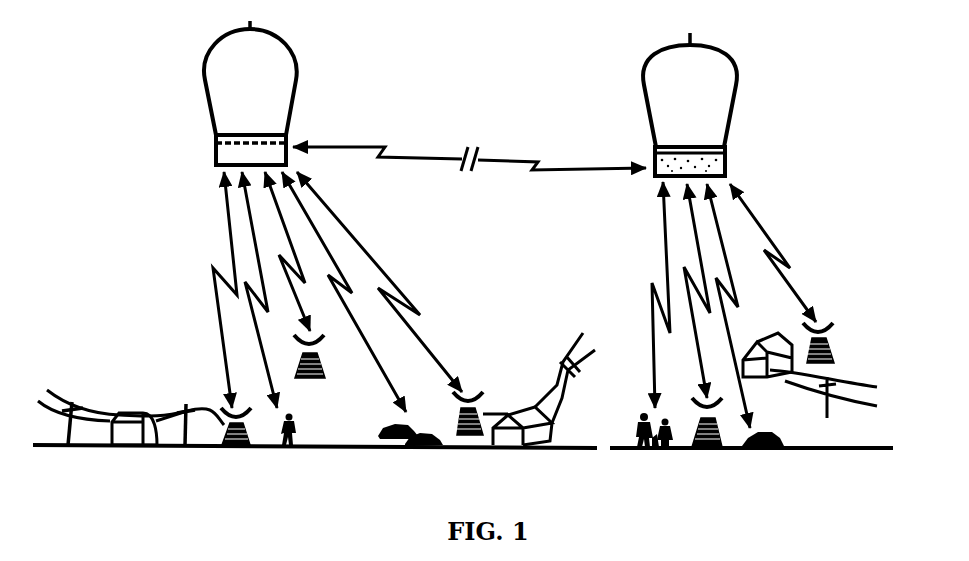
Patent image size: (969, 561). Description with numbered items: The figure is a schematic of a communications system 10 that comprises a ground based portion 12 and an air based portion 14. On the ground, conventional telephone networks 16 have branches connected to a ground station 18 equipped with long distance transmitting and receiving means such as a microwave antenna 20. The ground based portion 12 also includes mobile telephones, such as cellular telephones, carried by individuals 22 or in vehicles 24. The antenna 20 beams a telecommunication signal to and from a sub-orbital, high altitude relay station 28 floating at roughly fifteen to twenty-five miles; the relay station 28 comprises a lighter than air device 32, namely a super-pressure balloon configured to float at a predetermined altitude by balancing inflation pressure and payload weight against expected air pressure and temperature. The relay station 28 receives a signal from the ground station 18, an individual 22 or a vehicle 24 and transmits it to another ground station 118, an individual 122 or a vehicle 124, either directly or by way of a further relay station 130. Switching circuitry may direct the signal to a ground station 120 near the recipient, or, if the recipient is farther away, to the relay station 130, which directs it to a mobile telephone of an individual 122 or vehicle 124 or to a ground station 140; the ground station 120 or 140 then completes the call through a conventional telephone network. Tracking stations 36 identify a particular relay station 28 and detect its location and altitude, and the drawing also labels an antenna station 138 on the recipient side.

The communications system 10 is at (469, 85).
The ground based portion 12 is at (150, 360).
The air based portion 14 is at (165, 165).
The conventional telephone networks 16 is at (66, 420).
The ground station 18 is at (136, 447).
The antenna 20 is at (240, 447).
The individuals 22 is at (290, 447).
The vehicles 24 is at (418, 447).
The relay station 28 is at (190, 101).
The lighter than air device 32 is at (228, 52).
The tracking stations 36 is at (312, 380).
The ground station 118 is at (467, 437).
The ground station 120 is at (509, 447).
The individual 122 is at (653, 450).
The vehicle 124 is at (763, 450).
The relay station 130 is at (760, 85).
The antenna ground station 138 is at (835, 358).
The ground station 140 is at (753, 367).